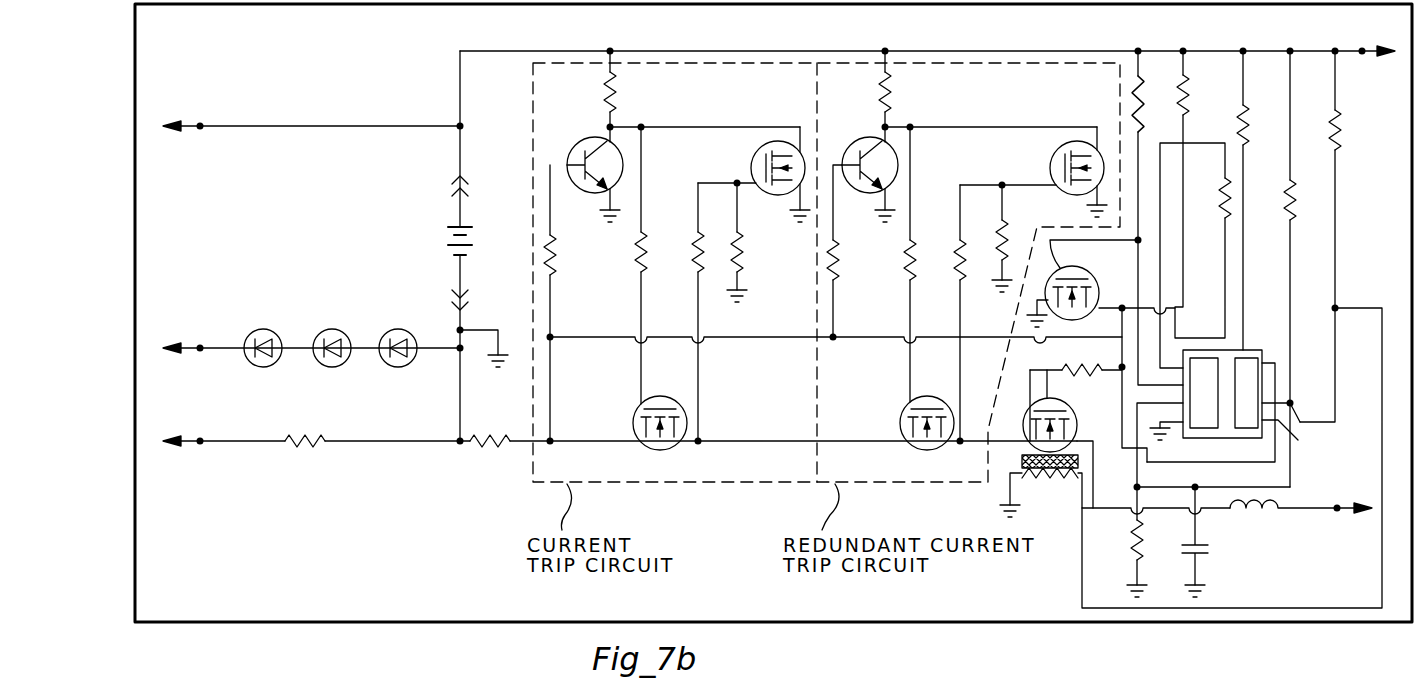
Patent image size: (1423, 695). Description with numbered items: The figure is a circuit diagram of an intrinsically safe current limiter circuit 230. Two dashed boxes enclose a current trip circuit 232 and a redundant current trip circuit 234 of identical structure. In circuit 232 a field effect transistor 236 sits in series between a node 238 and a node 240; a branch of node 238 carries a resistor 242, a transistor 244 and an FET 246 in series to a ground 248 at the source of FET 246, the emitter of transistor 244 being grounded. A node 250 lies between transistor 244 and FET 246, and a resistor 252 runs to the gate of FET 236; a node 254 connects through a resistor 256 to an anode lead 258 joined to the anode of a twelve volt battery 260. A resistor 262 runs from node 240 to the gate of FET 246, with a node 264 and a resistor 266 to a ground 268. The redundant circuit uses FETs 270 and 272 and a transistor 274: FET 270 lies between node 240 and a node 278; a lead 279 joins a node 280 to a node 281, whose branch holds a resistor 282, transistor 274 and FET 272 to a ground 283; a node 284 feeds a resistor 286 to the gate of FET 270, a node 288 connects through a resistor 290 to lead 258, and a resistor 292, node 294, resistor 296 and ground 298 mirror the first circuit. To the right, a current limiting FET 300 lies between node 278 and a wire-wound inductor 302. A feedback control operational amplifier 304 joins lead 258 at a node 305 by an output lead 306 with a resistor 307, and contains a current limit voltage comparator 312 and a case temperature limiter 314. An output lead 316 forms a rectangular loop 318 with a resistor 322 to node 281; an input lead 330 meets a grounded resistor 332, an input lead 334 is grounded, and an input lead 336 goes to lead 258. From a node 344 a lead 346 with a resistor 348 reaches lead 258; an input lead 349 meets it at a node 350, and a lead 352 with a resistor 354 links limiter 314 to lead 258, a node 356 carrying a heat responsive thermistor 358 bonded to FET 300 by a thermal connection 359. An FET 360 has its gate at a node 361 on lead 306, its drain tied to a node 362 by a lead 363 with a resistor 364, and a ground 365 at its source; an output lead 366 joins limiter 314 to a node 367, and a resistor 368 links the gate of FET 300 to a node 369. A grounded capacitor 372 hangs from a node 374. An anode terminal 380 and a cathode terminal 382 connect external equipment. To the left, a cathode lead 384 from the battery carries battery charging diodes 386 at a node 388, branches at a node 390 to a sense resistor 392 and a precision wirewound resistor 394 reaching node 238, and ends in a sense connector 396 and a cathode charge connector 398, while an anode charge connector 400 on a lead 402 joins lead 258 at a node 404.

The IS current limiter circuit 230 is at (970, 625).
The current trip circuit 232 is at (668, 484).
The redundant current trip circuit 234 is at (858, 484).
The field effect transistor 236 is at (633, 418).
The node 238 is at (552, 447).
The node 240 is at (700, 440).
The resistor 242 is at (554, 258).
The transistor 244 is at (590, 190).
The FET 246 is at (760, 192).
The ground 248 is at (795, 226).
The node 250 is at (641, 127).
The resistor 252 is at (641, 268).
The node 254 is at (606, 128).
The resistor 256 is at (616, 90).
The anode lead 258 is at (524, 51).
The battery 260 is at (448, 245).
The resistor 262 is at (692, 255).
The node 264 is at (737, 182).
The resistor 266 is at (742, 258).
The ground 268 is at (745, 300).
The FET 270 is at (900, 418).
The FET 272 is at (1050, 162).
The transistor 274 is at (856, 150).
The node 278 is at (960, 448).
The lead 279 is at (716, 338).
The node 280 is at (552, 340).
The node 281 is at (834, 340).
The resistor 282 is at (835, 262).
The ground 283 is at (1092, 206).
The node 284 is at (910, 127).
The resistor 286 is at (912, 270).
The node 288 is at (880, 128).
The resistor 290 is at (887, 100).
The resistor 292 is at (960, 262).
The node 294 is at (1002, 183).
The resistor 296 is at (960, 232).
The ground 298 is at (1002, 285).
The current limiting FET 300 is at (1075, 406).
The wire-wound inductor 302 is at (1238, 512).
The feedback control operational amplifier 304 is at (1225, 440).
The node 305 is at (1138, 51).
The output lead 306 is at (1137, 140).
The resistor 307 is at (1136, 100).
The current limit voltage comparator 312 is at (1215, 376).
The case temperature limiter 314 is at (1256, 378).
The output lead 316 is at (838, 336).
The rectangular loop 318 is at (1207, 157).
The resistor 322 is at (1225, 224).
The input lead 330 is at (1130, 508).
The grounded resistor 332 is at (1136, 550).
The input lead 334 is at (1162, 442).
The input lead 336 is at (1244, 280).
The node 344 is at (1139, 487).
The lead 346 is at (1291, 118).
The resistor 348 is at (1290, 200).
The input lead 349 is at (1292, 432).
The node 350 is at (1291, 403).
The lead 352 is at (1336, 190).
The resistor 354 is at (1338, 136).
The node 356 is at (1336, 308).
The heat responsive thermistor 358 is at (1012, 510).
The thermal connection 359 is at (1040, 480).
The FET 360 is at (1055, 245).
The node 361 is at (1136, 243).
The node 362 is at (1183, 51).
The lead 363 is at (1188, 282).
The resistor 364 is at (1185, 92).
The ground 365 is at (1045, 326).
The output lead 366 is at (1145, 458).
The node 367 is at (1122, 306).
The resistor 368 is at (1060, 370).
The node 369 is at (1122, 368).
The grounded capacitor 372 is at (1205, 552).
The node 374 is at (1193, 488).
The anode terminal 380 is at (1362, 51).
The cathode terminal 382 is at (1337, 511).
The cathode lead 384 is at (462, 395).
The battery charging diodes 386 is at (398, 329).
The node 388 is at (458, 350).
The node 390 is at (458, 441).
The sense resistor 392 is at (308, 441).
The precision wirewound resistor 394 is at (505, 445).
The sense connector 396 is at (200, 441).
The cathode charge connector 398 is at (200, 348).
The anode charge connector 400 is at (200, 126).
The lead 402 is at (352, 118).
The node 404 is at (458, 126).